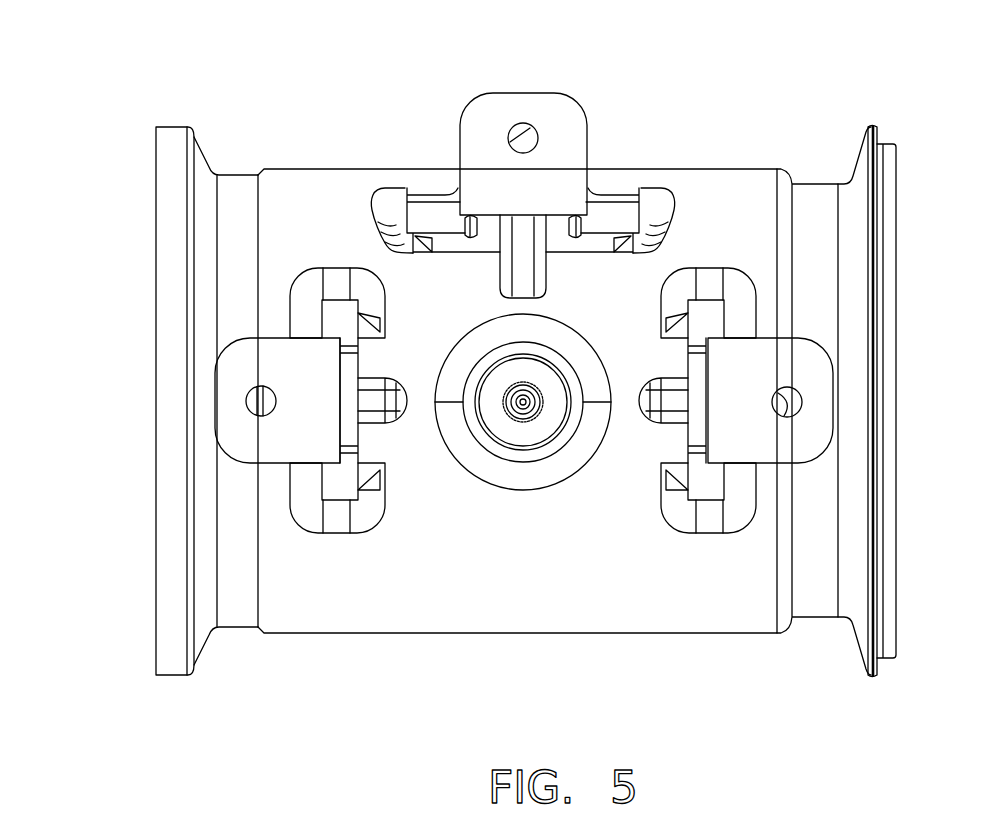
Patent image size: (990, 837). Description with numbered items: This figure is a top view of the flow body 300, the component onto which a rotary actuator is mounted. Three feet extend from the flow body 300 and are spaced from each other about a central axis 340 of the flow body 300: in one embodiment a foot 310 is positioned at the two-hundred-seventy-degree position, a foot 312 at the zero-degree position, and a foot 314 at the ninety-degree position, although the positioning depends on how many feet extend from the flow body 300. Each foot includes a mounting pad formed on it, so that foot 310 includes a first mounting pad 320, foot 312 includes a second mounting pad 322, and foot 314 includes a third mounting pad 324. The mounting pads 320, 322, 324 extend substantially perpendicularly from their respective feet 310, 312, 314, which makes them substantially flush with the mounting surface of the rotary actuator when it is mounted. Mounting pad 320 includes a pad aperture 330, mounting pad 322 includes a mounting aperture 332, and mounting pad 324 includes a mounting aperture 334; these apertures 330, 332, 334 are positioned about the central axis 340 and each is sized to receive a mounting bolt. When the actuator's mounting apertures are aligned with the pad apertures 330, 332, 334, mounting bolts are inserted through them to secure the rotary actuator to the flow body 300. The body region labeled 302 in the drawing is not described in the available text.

The flow body 300 is at (166, 63).
The cylindrical housing 302 is at (321, 188).
The foot 310 is at (282, 489).
The foot 312 is at (614, 156).
The foot 314 is at (768, 328).
The first mounting pad 320 is at (230, 372).
The second mounting pad 322 is at (567, 125).
The third mounting pad 324 is at (812, 377).
The pad aperture 330 is at (248, 408).
The mounting aperture 332 is at (513, 140).
The mounting aperture 334 is at (787, 411).
The central axis 340 is at (527, 396).